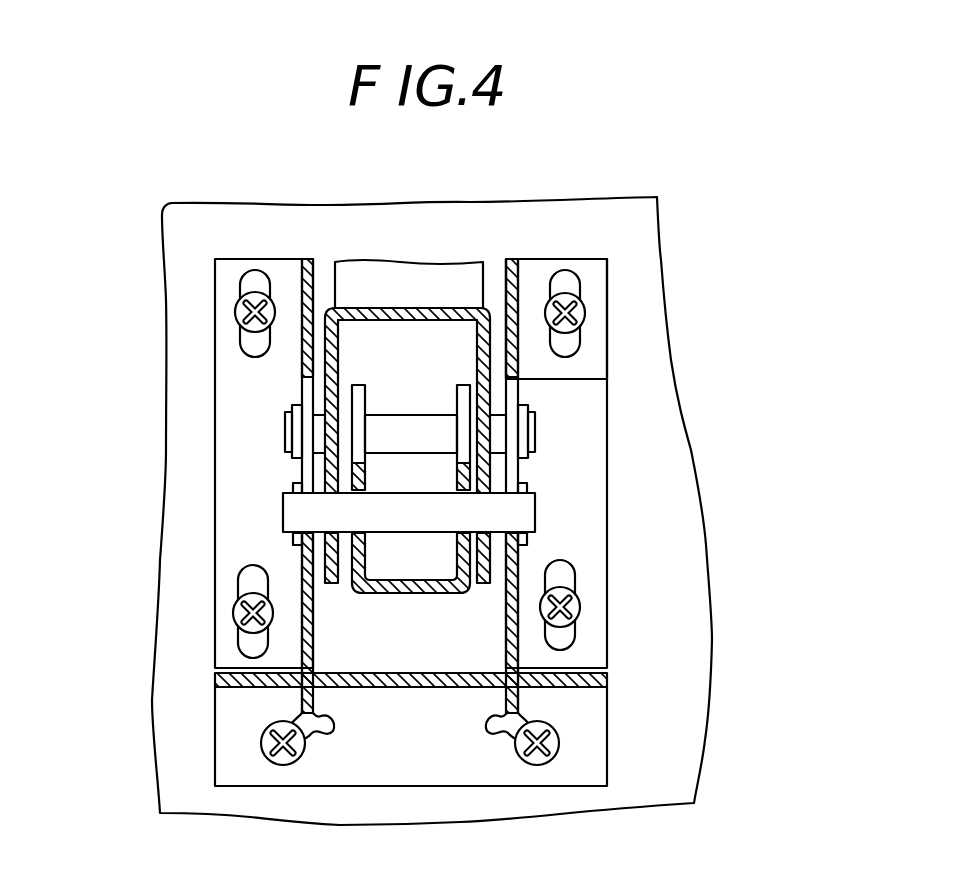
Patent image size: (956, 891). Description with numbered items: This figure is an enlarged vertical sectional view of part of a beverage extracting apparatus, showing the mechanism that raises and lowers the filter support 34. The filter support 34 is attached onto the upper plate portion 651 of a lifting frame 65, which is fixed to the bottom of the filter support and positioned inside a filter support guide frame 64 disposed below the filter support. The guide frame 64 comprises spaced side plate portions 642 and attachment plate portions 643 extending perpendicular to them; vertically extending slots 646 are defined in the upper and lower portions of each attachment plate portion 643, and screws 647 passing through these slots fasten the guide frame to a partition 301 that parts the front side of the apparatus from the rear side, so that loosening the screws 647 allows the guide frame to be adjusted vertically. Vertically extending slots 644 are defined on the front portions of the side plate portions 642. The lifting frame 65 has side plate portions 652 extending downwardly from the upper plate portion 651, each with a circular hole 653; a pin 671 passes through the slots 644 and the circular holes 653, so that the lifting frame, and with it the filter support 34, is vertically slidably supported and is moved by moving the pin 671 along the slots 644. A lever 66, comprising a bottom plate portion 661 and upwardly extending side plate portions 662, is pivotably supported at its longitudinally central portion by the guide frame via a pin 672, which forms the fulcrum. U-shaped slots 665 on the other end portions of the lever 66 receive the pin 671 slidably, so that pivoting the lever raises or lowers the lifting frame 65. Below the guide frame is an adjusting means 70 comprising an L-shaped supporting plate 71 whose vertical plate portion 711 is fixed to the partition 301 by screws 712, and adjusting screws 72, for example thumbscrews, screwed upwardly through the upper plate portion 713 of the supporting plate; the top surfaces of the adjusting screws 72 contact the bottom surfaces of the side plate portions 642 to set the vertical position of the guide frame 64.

The filter support 34 is at (368, 272).
The partition 301 is at (407, 218).
The upper plate portion 651 is at (473, 305).
The lifting frame 65 is at (438, 305).
The filter support guide frame 64 is at (558, 255).
The slots 646 is at (255, 280).
The screws 647 is at (240, 312).
The side plate portions 652 is at (310, 350).
The slots 644 is at (305, 395).
The attachment plate portions 643 is at (225, 503).
The side plate portions 642 is at (300, 653).
The pin 672 is at (537, 423).
The pin 671 is at (520, 513).
The side plate portions 662 is at (465, 385).
The U-shaped slots 665 is at (458, 507).
The circular hole 653 is at (462, 518).
The lever 66 is at (351, 600).
The bottom plate portion 661 is at (408, 600).
The upper plate portion 713 is at (605, 683).
The L-shaped supporting plate 71 is at (332, 773).
The vertical plate portion 711 is at (420, 772).
The adjusting means 70 is at (514, 794).
The screws 712 is at (262, 752).
The adjusting screws 72 is at (487, 731).